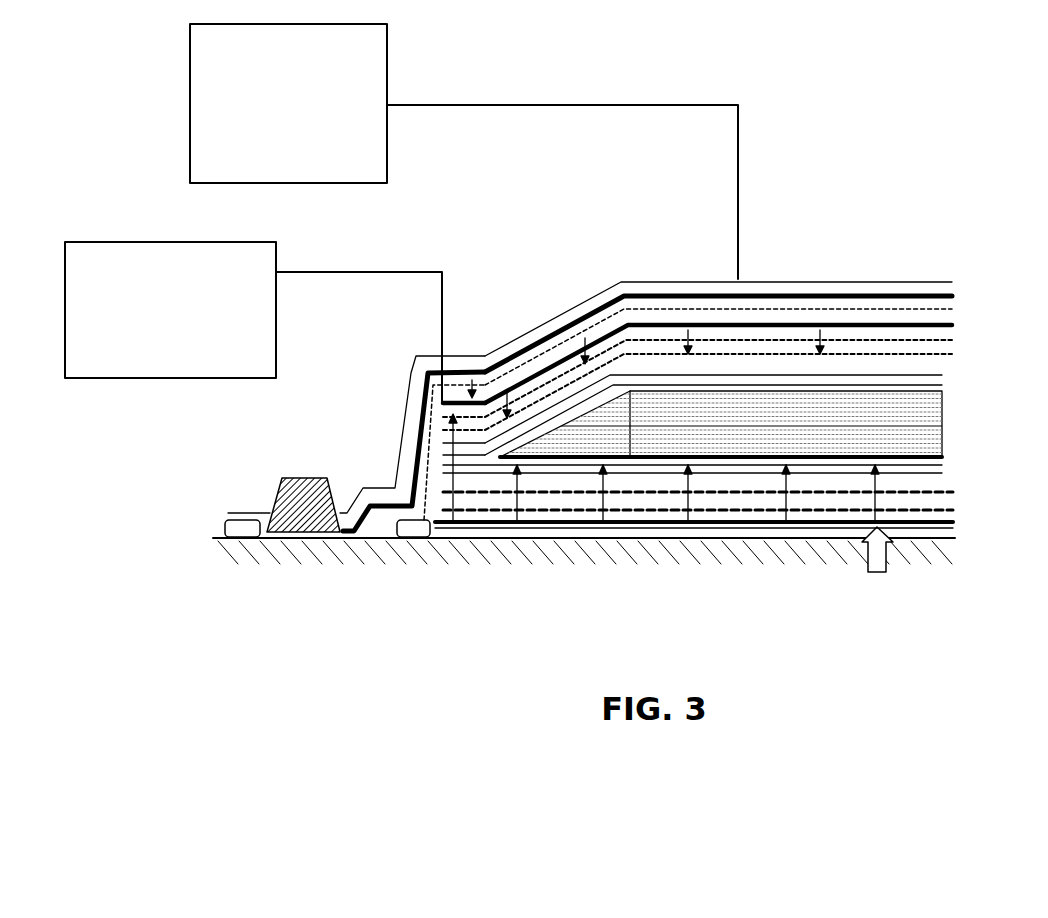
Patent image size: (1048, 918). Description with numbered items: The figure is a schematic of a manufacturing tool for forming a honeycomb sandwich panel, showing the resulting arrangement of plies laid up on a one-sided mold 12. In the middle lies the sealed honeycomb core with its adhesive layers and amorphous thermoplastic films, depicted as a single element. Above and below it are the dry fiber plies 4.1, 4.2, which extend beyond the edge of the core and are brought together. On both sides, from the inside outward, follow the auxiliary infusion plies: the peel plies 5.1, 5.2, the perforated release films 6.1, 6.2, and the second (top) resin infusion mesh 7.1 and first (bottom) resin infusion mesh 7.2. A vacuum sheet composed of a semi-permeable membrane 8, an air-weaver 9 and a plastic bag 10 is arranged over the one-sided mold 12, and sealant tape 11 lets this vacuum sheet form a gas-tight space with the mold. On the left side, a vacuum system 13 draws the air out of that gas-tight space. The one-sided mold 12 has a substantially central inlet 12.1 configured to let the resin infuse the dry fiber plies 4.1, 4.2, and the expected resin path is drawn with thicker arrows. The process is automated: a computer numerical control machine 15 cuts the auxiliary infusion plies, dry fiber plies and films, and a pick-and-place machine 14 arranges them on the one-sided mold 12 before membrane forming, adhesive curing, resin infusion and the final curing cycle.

The top dry fiber ply 4.1 is at (952, 373).
The bottom dry fiber ply 4.2 is at (953, 468).
The top peel ply 5.1 is at (918, 350).
The bottom peel ply 5.2 is at (938, 493).
The top perforated release film 6.1 is at (908, 308).
The bottom perforated release film 6.2 is at (900, 512).
The second (top) resin infusion mesh 7.1 is at (722, 325).
The first (bottom) resin infusion mesh 7.2 is at (567, 530).
The semi-permeable membrane 8 is at (588, 335).
The air-weaver 9 is at (515, 353).
The plastic bag 10 is at (412, 373).
The sealant tape 11 is at (327, 570).
The one-sided mold 12 is at (683, 562).
The central inlet 12.1 is at (860, 565).
The vacuum system 13 is at (288, 475).
The pick-and-place machine 14 is at (464, 151).
The computer numerical control (CNC) machine 15 is at (253, 322).